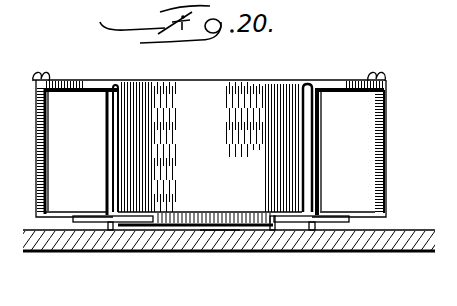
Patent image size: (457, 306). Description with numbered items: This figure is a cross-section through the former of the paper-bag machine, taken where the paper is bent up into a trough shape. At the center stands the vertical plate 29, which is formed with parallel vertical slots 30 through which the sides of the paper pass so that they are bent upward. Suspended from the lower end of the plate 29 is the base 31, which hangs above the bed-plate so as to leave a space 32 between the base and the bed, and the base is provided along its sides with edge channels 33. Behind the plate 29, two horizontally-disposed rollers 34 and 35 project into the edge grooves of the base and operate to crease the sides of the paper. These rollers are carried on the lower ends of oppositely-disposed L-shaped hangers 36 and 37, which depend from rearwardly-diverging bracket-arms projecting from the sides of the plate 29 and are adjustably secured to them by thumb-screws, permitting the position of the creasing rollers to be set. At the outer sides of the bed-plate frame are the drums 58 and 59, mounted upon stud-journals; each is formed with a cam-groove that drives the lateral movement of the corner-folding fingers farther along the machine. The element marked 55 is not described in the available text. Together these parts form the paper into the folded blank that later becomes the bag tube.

The vertical plate 29 is at (210, 147).
The parallel vertical slots 30 is at (116, 160).
The base 31 is at (220, 230).
The space 32 is at (182, 229).
The edge channels 33 is at (272, 218).
The roller 34 is at (87, 223).
The roller 35 is at (328, 219).
The L-shaped hanger 36 is at (60, 148).
The L-shaped hanger 37 is at (370, 148).
The lower cross band 55 is at (153, 224).
The drum 58 is at (50, 76).
The drum 59 is at (97, 81).